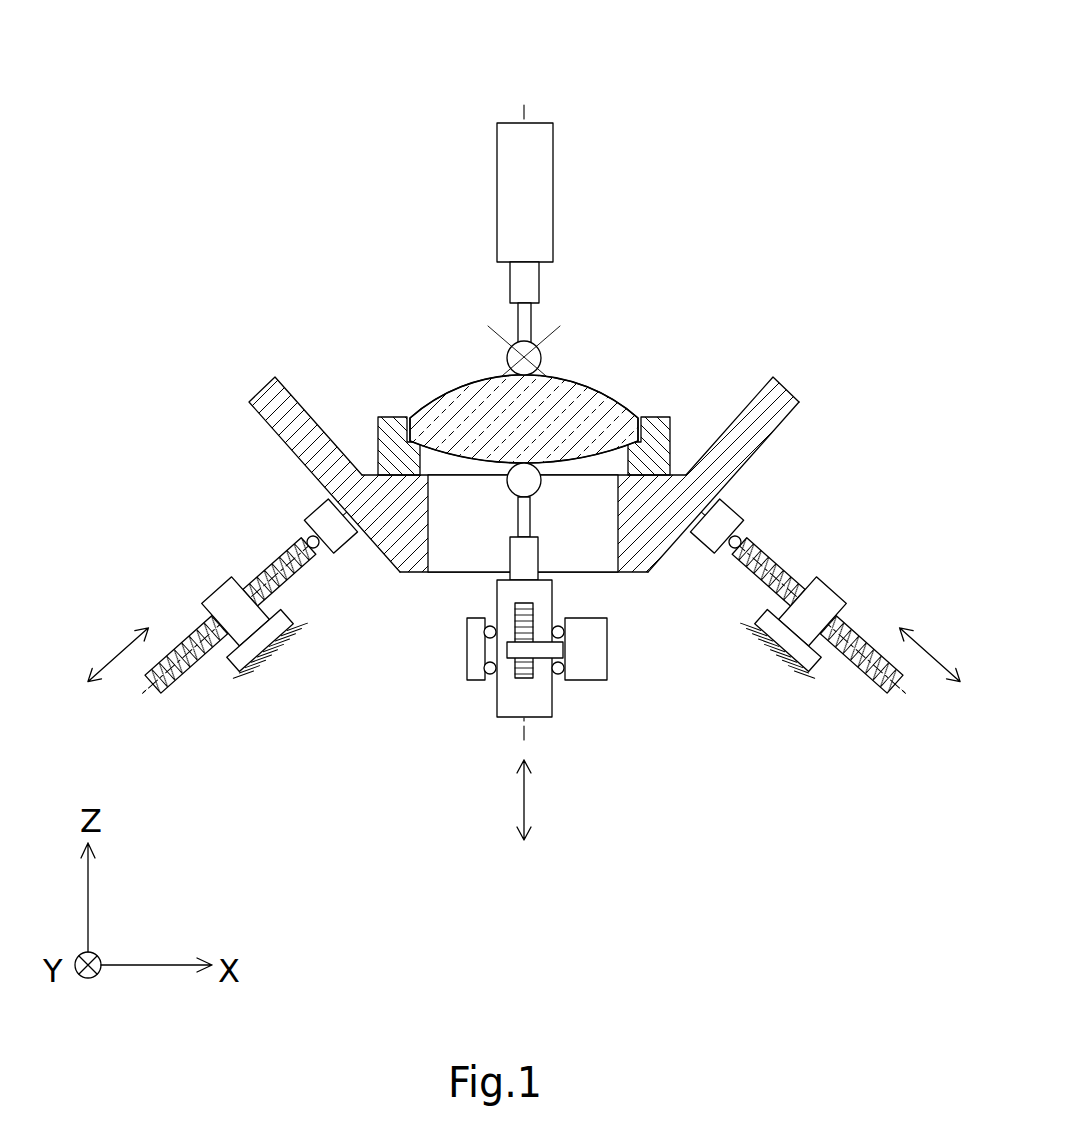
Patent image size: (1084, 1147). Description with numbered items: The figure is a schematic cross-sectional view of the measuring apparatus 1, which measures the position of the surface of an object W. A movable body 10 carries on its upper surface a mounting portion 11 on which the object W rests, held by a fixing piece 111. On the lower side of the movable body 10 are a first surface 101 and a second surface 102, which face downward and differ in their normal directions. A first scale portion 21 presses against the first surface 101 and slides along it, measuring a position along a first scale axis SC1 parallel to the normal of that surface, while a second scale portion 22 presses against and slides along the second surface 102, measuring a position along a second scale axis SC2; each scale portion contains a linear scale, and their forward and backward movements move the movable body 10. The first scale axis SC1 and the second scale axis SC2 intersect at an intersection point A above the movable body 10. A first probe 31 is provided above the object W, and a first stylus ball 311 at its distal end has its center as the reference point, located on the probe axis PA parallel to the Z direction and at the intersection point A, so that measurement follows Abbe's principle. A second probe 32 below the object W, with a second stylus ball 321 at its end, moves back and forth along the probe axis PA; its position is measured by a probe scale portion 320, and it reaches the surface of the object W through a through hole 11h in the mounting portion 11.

The measuring apparatus 1 is at (760, 101).
The probe axis PA is at (527, 112).
The first probe 31 is at (548, 219).
The first stylus ball 311 is at (545, 354).
The intersection point A is at (511, 352).
The object W is at (620, 368).
The mounting portion 11 is at (364, 470).
The through hole 11h is at (450, 558).
The fixing piece 111 is at (400, 428).
The movable body 10 is at (765, 417).
The first surface 101 is at (270, 440).
The second surface 102 is at (748, 464).
The first scale portion 21 is at (249, 552).
The second scale portion 22 is at (800, 559).
The second stylus ball 321 is at (540, 484).
The second probe 32 is at (536, 556).
The probe scale portion 320 is at (537, 688).
The first scale axis SC1 is at (140, 693).
The second scale axis SC2 is at (908, 694).